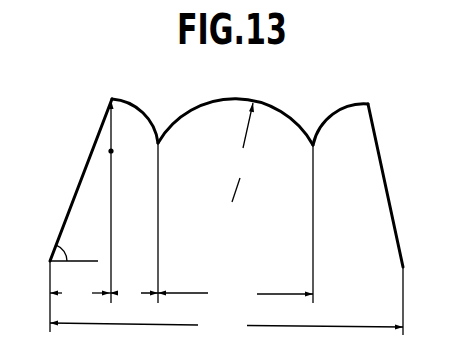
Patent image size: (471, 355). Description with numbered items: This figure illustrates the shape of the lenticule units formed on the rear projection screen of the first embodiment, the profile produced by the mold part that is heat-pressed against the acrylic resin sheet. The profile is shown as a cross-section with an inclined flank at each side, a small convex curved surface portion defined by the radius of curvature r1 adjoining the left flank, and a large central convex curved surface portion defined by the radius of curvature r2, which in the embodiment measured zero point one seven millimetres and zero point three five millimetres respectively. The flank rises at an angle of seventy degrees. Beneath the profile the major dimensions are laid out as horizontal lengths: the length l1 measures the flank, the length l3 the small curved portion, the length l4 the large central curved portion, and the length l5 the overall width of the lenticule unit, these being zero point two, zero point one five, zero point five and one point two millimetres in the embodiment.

The radius of curvature r1 is at (133, 201).
The radius of curvature r2 is at (235, 150).
The length l1 is at (84, 293).
The length l3 is at (159, 294).
The length l4 is at (235, 295).
The length l5 is at (226, 327).